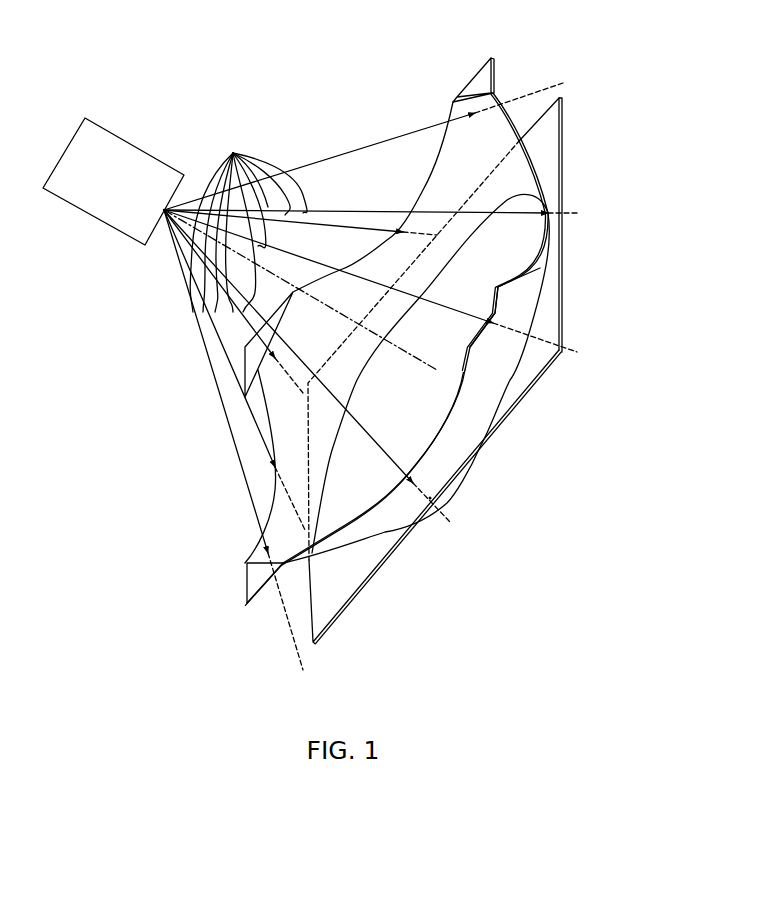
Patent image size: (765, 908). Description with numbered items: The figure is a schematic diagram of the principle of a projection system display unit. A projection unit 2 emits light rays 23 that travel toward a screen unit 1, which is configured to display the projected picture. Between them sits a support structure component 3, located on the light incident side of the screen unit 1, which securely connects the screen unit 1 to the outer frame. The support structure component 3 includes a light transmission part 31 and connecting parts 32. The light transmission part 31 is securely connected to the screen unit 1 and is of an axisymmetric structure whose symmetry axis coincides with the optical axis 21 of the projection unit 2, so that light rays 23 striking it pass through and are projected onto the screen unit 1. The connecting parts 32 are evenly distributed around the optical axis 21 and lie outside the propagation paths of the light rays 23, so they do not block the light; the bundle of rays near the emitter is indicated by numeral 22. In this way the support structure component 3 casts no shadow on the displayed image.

The screen unit 1 is at (562, 150).
The projection unit 2 is at (113, 155).
The optical axis 21 is at (252, 282).
The light guide fibers 22 is at (248, 221).
The light beams 23 is at (520, 88).
The support structure component 3 is at (583, 452).
The light transmission part 31 is at (480, 402).
The connecting part 32 is at (480, 337).